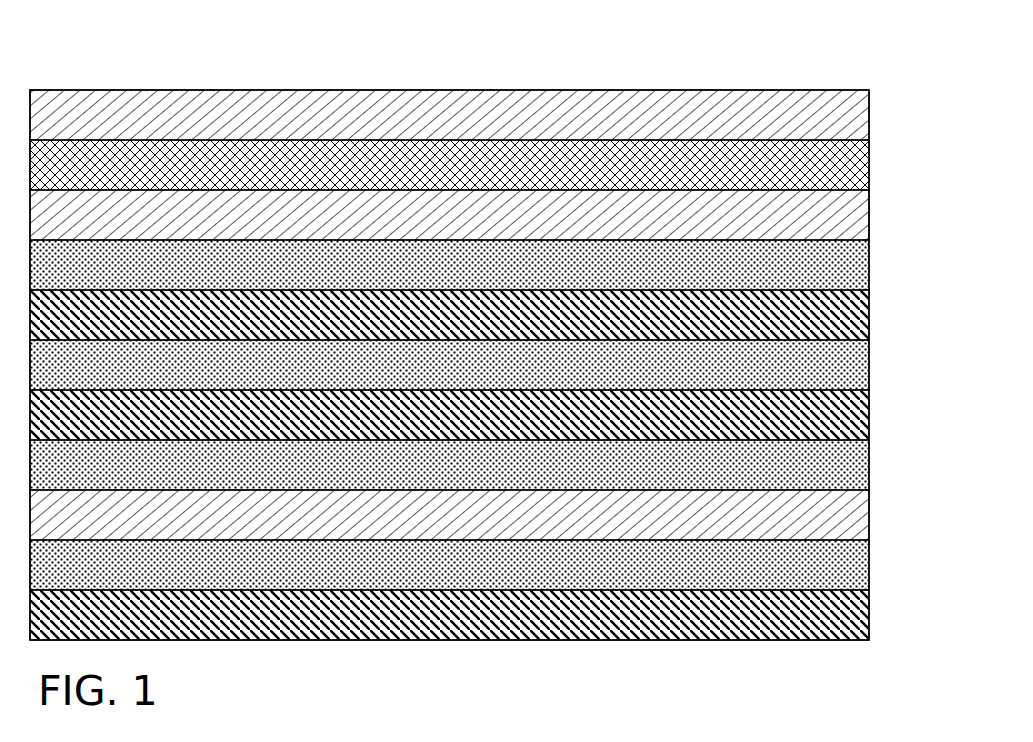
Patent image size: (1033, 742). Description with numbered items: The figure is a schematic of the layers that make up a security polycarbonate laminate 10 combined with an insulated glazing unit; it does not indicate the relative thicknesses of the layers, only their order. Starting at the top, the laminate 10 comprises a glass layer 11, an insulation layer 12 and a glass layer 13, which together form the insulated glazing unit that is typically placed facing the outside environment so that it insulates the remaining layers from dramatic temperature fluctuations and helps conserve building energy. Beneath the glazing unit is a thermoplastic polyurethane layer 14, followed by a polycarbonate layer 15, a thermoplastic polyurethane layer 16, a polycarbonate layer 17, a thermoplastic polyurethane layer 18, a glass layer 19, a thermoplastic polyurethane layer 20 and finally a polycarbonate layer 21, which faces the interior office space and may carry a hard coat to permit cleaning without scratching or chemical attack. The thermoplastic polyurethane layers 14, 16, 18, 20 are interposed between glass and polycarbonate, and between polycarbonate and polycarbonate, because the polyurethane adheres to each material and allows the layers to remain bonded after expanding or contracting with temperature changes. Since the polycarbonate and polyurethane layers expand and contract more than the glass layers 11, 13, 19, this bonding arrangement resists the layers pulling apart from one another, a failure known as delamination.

The laminate 10 is at (772, 75).
The glass layer 11 is at (869, 113).
The insulation layer 12 is at (869, 163).
The glass layer 13 is at (869, 213).
The thermoplastic polyurethane layer 14 is at (869, 263).
The polycarbonate layer 15 is at (869, 313).
The thermoplastic polyurethane layer 16 is at (869, 363).
The polycarbonate layer 17 is at (869, 413).
The thermoplastic polyurethane layer 18 is at (869, 463).
The glass layer 19 is at (869, 513).
The thermoplastic polyurethane layer 20 is at (869, 563).
The polycarbonate layer 21 is at (869, 613).